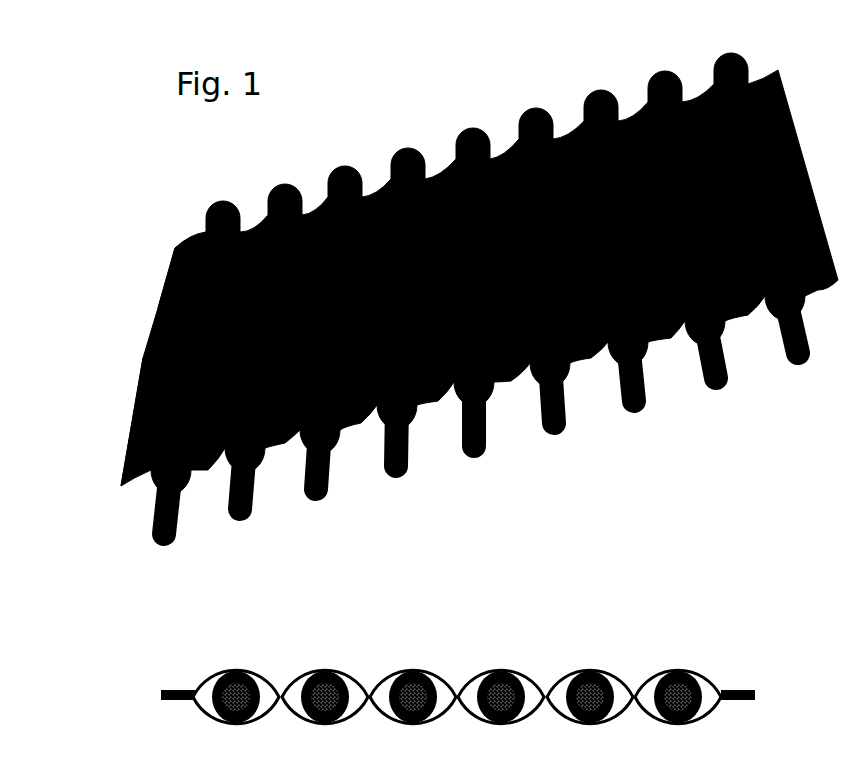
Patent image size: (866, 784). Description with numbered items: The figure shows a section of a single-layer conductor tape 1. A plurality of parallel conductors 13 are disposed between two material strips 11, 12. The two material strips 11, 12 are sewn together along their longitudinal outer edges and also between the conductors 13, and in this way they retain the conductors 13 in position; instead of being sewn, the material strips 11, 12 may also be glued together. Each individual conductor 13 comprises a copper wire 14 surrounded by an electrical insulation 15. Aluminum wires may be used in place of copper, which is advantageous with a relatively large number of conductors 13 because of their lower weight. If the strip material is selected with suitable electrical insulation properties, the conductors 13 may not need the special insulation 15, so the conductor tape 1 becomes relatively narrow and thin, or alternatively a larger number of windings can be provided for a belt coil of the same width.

The conductor tape 1 is at (413, 120).
The material strip 11 is at (118, 438).
The material strip 12 is at (117, 482).
The conductor 13 is at (233, 508).
The copper wire 14 is at (398, 455).
The electrical insulation 15 is at (483, 395).